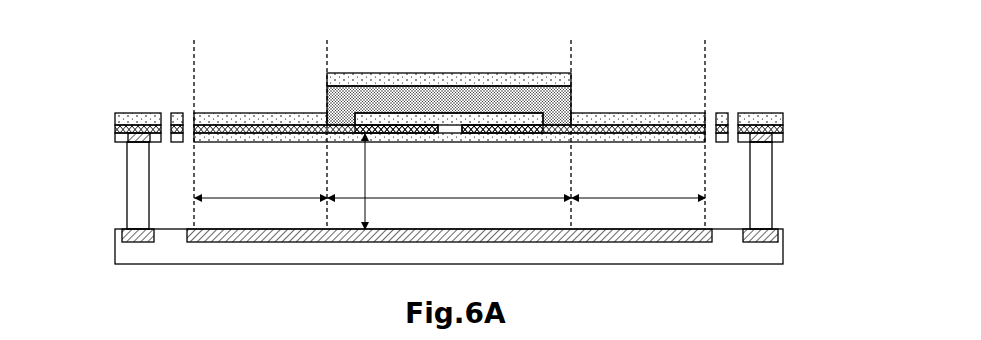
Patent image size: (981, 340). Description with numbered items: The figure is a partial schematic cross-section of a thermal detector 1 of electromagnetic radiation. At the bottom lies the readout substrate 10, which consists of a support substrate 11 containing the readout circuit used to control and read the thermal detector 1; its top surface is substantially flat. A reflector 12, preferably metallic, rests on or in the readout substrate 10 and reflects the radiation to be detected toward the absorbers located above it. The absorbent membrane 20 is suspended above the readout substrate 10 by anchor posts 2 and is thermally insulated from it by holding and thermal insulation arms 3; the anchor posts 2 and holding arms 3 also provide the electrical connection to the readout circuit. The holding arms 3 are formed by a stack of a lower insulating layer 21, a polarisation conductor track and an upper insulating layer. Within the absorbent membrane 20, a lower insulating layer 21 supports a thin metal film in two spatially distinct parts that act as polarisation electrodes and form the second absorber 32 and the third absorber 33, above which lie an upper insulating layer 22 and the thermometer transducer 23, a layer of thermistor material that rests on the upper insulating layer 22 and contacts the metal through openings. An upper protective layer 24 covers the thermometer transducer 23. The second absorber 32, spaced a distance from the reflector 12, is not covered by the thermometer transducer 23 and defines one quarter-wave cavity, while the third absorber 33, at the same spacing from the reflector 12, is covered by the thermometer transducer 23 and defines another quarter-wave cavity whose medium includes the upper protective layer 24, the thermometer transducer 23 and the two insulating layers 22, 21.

The thermal detector 1 is at (90, 37).
The anchor posts 2 is at (774, 186).
The holding and thermal insulation arms 3 is at (722, 112).
The readout substrate 10 is at (846, 237).
The support substrate 11 is at (785, 245).
The reflector 12 is at (712, 236).
The absorbent membrane 20 is at (305, 58).
The lower insulating layer 21 is at (787, 134).
The upper insulating layer 22 is at (650, 112).
The thermometer transducer 23 is at (576, 98).
The upper protective layer 24 is at (576, 80).
The second absorber 32 is at (255, 117).
The third absorber 33 is at (482, 124).